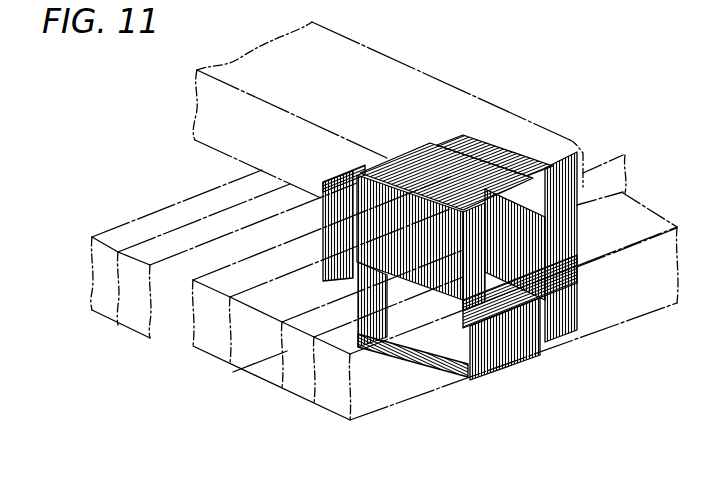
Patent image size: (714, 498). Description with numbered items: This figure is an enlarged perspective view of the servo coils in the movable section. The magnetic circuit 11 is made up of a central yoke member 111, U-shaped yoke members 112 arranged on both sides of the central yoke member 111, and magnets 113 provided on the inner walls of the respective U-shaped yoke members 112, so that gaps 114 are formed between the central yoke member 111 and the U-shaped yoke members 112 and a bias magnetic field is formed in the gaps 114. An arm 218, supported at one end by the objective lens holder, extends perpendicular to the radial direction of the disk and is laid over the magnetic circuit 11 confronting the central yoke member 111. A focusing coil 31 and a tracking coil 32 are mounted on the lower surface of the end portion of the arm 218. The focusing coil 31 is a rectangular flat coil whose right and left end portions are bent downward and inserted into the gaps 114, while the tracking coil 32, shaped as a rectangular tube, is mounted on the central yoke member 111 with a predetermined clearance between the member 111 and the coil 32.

The magnetic circuit 11 is at (372, 318).
The central yoke member 111 is at (194, 350).
The U-shaped yoke member 112 is at (96, 335).
The magnet 113 is at (122, 340).
The gap 114 is at (212, 268).
The arm 218 is at (425, 73).
The focusing coil 31 is at (571, 331).
The tracking coil 32 is at (523, 363).